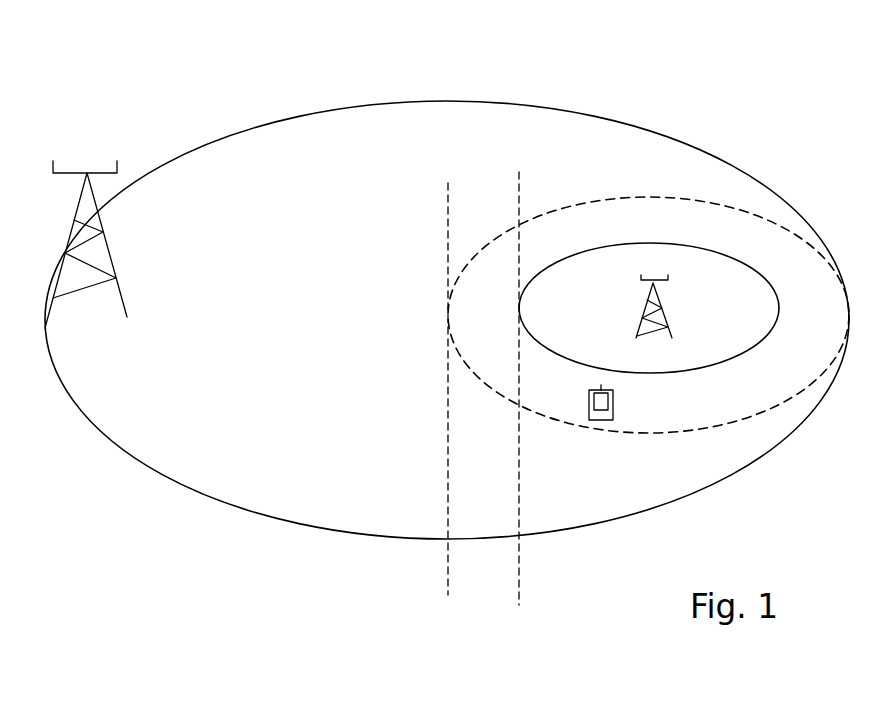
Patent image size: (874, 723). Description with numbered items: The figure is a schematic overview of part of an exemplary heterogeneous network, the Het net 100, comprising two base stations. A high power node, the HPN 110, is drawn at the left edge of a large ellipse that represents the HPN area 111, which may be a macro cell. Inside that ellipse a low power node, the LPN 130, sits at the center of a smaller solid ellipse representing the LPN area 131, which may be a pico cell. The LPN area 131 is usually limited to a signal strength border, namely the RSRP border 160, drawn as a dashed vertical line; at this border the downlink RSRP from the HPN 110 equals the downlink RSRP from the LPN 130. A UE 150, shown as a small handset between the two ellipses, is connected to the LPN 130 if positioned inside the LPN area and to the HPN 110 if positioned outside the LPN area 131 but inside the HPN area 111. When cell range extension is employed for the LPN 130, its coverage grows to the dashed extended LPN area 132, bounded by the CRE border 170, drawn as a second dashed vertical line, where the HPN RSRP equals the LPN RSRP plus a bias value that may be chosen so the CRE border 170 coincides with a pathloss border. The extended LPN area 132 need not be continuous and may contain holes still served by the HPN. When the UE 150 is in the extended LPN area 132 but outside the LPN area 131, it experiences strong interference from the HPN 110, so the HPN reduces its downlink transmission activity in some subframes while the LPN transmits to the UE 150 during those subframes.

The Het net 100 is at (276, 34).
The HPN 110 is at (116, 267).
The HPN area 111 is at (243, 135).
The LPN 130 is at (670, 303).
The LPN area 131 is at (723, 362).
The extended LPN area 132 is at (572, 203).
The UE 150 is at (601, 420).
The RSRP border 160 is at (520, 588).
The CRE border 170 is at (446, 584).